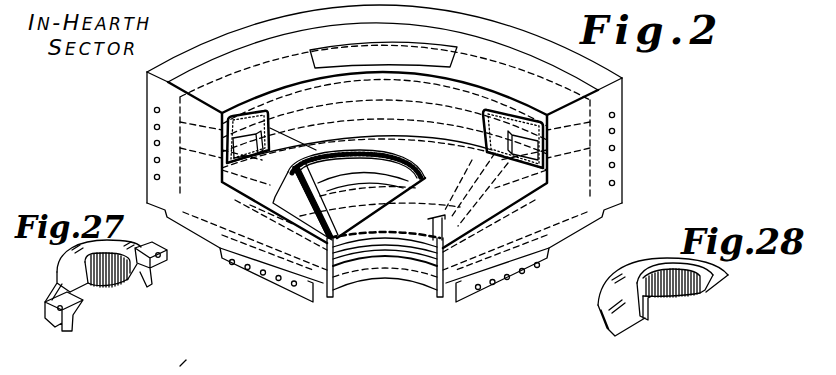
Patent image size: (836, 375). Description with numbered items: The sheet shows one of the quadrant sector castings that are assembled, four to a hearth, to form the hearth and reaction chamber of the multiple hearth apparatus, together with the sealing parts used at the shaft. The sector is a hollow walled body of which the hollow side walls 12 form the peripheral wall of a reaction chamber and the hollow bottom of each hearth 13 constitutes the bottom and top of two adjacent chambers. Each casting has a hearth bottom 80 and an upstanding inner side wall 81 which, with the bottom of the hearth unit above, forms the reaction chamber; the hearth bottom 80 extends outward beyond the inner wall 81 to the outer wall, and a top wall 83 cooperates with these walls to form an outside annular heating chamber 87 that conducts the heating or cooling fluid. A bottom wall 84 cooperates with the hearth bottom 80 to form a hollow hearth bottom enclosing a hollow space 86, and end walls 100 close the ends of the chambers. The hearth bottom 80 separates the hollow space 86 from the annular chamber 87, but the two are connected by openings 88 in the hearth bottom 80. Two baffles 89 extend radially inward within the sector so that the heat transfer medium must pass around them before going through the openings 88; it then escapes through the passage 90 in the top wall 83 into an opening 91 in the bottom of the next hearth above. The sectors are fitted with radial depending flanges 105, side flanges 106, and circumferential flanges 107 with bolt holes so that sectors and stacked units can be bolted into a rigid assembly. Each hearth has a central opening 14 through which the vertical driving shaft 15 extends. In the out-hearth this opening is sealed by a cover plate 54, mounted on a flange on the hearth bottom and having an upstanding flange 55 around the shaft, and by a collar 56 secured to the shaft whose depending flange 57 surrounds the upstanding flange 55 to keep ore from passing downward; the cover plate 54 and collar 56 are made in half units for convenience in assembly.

In FIG. 2, the hollow side walls 12 is at (597, 133).
In FIG. 2, the hollow bottom of each hearth 13 is at (568, 246).
In FIG. 2, the central opening 14 is at (403, 273).
In FIG. 2, the vertical driving shaft 15 is at (176, 367).
In FIG. 28, the cover plate 54 is at (705, 291).
In FIG. 28, the upstanding flange 55 is at (652, 312).
In FIG. 27, the collar 56 is at (58, 268).
In FIG. 27, the depending flange 57 is at (70, 334).
In FIG. 2, the hearth bottom 80 is at (384, 189).
In FIG. 2, the upstanding inner side wall 81 is at (357, 157).
In FIG. 2, the top wall 83 is at (237, 65).
In FIG. 2, the bottom wall 84 is at (204, 236).
In FIG. 2, the hollow space beneath the hearth 86 is at (598, 220).
In FIG. 2, the outside annular heating chamber 87 is at (188, 120).
In FIG. 2, the openings 88 is at (385, 139).
In FIG. 2, the baffles 89 is at (340, 214).
In FIG. 2, the passage 90 is at (383, 55).
In FIG. 2, the opening 91 is at (349, 195).
In FIG. 2, the end walls 100 is at (384, 235).
In FIG. 2, the radial depending flanges 105 is at (265, 283).
In FIG. 2, the side flanges 106 is at (150, 147).
In FIG. 2, the circumferential flanges 107 is at (288, 21).